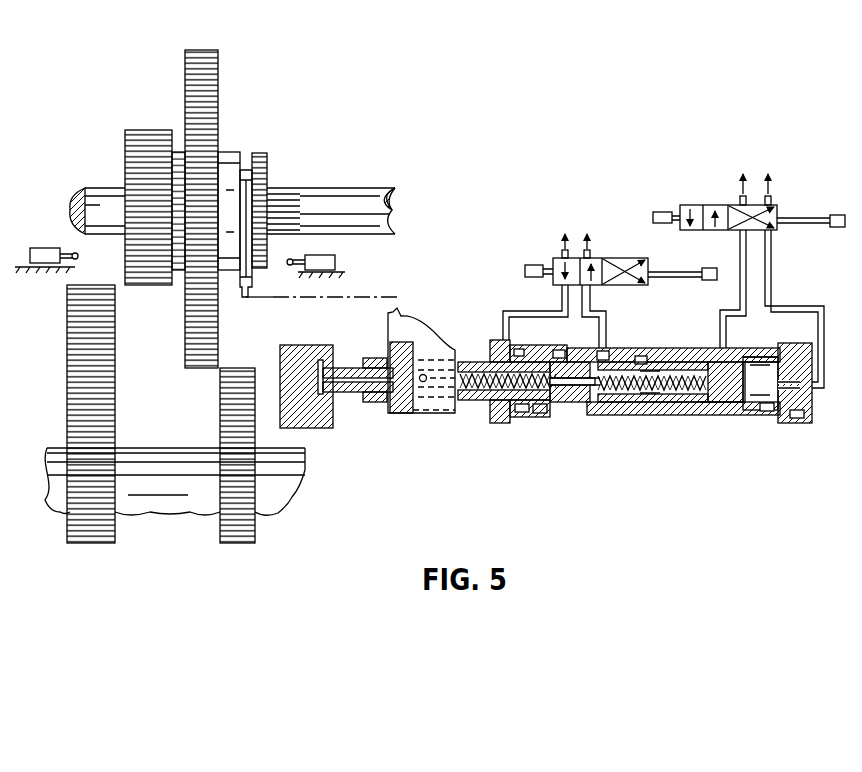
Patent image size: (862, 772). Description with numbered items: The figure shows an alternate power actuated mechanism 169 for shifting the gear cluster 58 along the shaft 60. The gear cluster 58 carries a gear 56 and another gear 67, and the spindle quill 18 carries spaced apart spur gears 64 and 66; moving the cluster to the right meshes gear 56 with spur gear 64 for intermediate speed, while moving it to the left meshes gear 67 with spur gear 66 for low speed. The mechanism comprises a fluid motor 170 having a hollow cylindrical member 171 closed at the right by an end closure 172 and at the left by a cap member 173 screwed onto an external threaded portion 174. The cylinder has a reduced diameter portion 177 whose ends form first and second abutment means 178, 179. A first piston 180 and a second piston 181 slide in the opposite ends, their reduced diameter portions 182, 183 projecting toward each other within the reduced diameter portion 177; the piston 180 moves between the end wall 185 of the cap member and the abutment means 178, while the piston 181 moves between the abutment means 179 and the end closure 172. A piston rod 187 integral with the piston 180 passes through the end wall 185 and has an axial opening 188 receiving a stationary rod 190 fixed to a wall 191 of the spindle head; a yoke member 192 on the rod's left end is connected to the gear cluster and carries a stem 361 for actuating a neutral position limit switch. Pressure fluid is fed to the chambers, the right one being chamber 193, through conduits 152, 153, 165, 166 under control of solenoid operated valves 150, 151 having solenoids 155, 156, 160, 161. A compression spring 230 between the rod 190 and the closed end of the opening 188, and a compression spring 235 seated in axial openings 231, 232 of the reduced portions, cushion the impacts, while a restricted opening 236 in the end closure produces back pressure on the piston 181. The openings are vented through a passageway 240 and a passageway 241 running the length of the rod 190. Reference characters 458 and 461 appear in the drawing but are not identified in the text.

The spindle quill 18 is at (270, 498).
The gear 56 is at (218, 84).
The gear cluster 58 is at (171, 103).
The shaft 60 is at (381, 233).
The spur gear 64 is at (240, 542).
The spur gear 66 is at (85, 542).
The gear 67 is at (152, 130).
The solenoid operated valve 150 is at (727, 190).
The solenoid operated valve 151 is at (571, 250).
The conduit 152 is at (740, 290).
The conduit 153 is at (771, 246).
The solenoid 155 is at (666, 212).
The solenoid 156 is at (838, 215).
The solenoid 160 is at (531, 265).
The solenoid 161 is at (708, 268).
The conduit 165 is at (590, 301).
The conduit 166 is at (536, 312).
The power actuated mechanism 169 is at (635, 213).
The fluid motor 170 is at (692, 422).
The hollow cylindrical member 171 is at (697, 350).
The end closure 172 is at (796, 421).
The end closure or cap member 173 is at (508, 422).
The external threaded portion 174 is at (514, 350).
The reduced diameter portion 177 is at (646, 404).
The first abutment means 178 is at (598, 351).
The second abutment means 179 is at (736, 416).
The first piston 180 is at (571, 412).
The second piston 181 is at (760, 365).
The reduced diameter portion 182 is at (650, 412).
The reduced diameter portion 183 is at (762, 383).
The end wall 185 is at (500, 416).
The piston rod 187 is at (468, 368).
The axial opening 188 is at (476, 396).
The stationary rod 190 is at (350, 392).
The wall 191 is at (310, 346).
The yoke member 192 is at (405, 321).
The cylindrical chamber 193 is at (766, 412).
The compression spring 230 is at (540, 414).
The axial opening 231 is at (641, 360).
The axial opening 232 is at (700, 397).
The compression spring 235 is at (620, 352).
The restricted opening 236 is at (813, 416).
The passageway 240 is at (581, 396).
The passageway 241 is at (366, 370).
The stem 361 is at (424, 385).
The sensor 458 is at (45, 248).
The sensor 461 is at (335, 258).